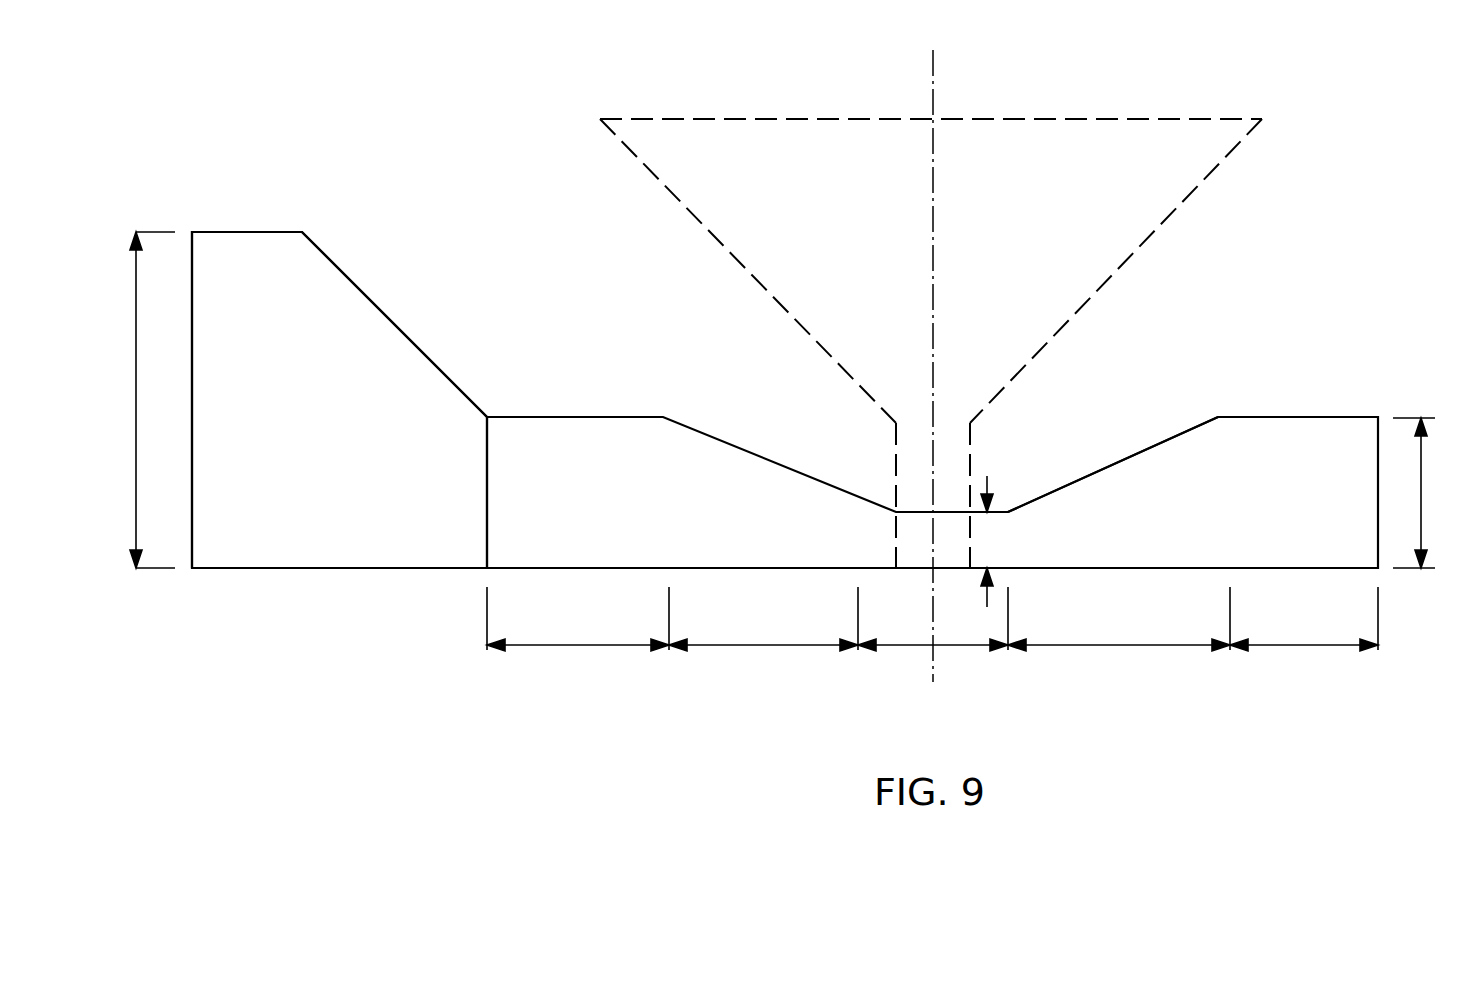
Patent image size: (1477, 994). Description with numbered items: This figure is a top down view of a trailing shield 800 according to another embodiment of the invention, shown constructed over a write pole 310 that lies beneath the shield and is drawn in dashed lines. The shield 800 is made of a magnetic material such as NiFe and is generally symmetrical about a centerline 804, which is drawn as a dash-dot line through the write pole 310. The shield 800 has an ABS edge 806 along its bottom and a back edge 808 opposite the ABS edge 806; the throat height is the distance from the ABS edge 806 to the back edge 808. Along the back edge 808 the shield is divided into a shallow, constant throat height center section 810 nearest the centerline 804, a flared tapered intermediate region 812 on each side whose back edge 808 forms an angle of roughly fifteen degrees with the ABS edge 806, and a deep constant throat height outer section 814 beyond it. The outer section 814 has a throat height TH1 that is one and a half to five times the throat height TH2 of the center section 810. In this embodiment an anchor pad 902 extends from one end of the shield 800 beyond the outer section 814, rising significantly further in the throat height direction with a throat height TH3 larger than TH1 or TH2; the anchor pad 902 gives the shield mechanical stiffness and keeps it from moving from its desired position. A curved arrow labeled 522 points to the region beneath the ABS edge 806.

The shield 800 is at (1330, 402).
The anchor pad 902 is at (366, 416).
The back edge 808 is at (1177, 434).
The ABS edge 806 is at (1274, 569).
The write pole 310 is at (1092, 104).
The centerline 804 is at (935, 70).
The substrate 522 is at (1058, 600).
The shallow constant throat height center section 810 is at (942, 647).
The flared tapered intermediate region 812 is at (722, 647).
The deep constant throat height outer section 814 is at (577, 647).
The throat height of outer section TH1 is at (1419, 493).
The throat height of center section TH2 is at (987, 478).
The throat height of anchor pad TH3 is at (145, 400).